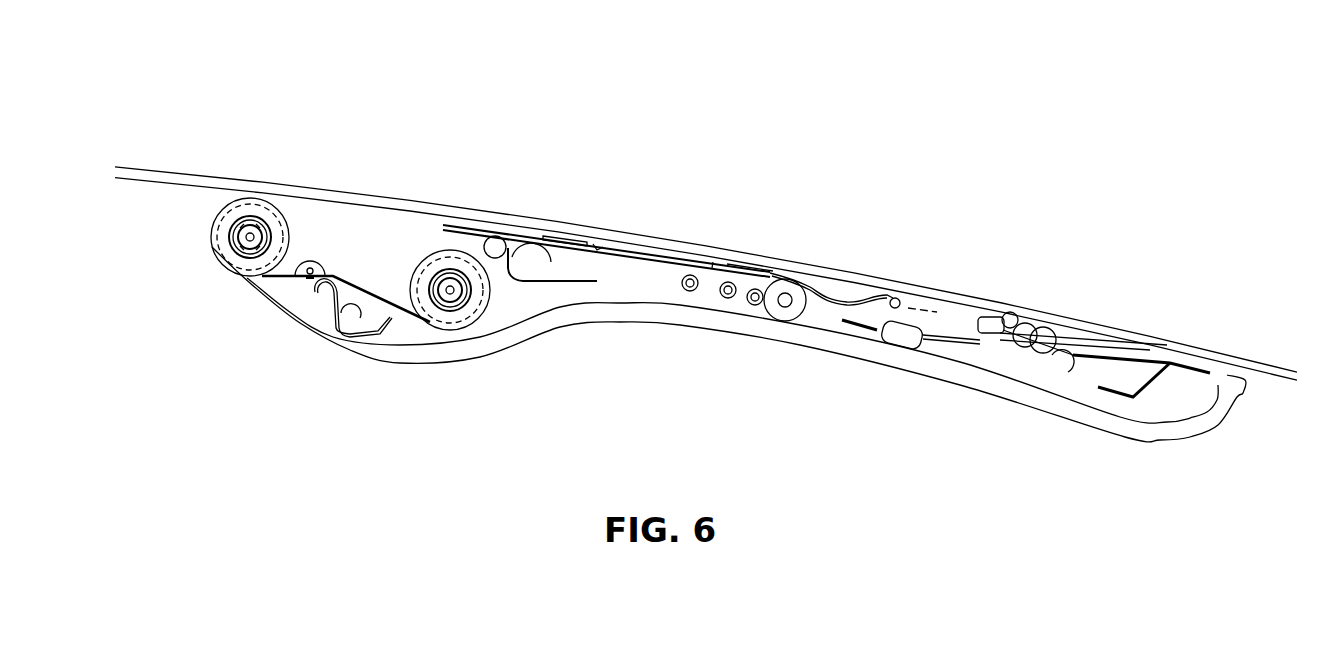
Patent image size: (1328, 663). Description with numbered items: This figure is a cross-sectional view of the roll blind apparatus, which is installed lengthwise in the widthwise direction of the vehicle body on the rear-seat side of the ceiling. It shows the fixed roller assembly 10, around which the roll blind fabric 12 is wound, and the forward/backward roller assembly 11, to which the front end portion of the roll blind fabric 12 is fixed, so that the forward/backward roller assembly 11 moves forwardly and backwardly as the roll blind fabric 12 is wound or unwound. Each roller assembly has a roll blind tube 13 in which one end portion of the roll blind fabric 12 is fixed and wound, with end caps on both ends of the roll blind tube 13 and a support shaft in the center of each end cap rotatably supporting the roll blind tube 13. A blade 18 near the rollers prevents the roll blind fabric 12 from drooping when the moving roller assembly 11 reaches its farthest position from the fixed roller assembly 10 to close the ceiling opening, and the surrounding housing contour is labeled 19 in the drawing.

The fixed roller assembly 10 is at (434, 232).
The forward/backward roller assembly 11 is at (241, 182).
The roll blind fabric 12 is at (265, 208).
The roll blind tube 13 is at (228, 244).
The blade 18 is at (315, 262).
The housing 19 is at (377, 357).